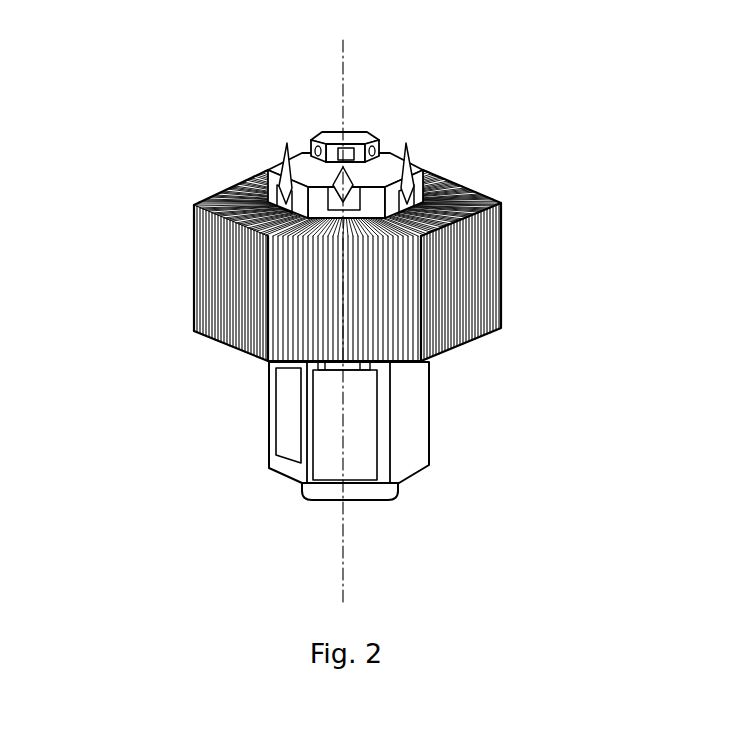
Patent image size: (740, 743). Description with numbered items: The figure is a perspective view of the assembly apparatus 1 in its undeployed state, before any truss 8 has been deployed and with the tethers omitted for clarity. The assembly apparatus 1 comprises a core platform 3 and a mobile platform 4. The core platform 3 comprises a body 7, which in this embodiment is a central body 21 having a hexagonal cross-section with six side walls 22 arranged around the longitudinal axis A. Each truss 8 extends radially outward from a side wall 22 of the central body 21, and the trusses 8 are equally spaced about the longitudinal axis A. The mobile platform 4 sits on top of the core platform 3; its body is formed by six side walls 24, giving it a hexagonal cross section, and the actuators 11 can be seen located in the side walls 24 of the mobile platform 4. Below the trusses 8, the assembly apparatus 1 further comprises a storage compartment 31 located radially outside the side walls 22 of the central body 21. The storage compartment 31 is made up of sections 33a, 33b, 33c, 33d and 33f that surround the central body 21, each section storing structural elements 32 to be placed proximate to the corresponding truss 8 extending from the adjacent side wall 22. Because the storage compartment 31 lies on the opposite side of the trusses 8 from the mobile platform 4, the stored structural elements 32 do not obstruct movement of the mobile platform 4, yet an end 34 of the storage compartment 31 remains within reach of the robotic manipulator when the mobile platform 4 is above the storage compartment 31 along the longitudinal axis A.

The assembly apparatus 1 is at (229, 90).
The core platform 3 is at (423, 453).
The mobile platform 4 is at (357, 137).
The body 7 is at (415, 393).
The truss 8 is at (431, 148).
The actuator 11 is at (313, 147).
The central body 21 is at (420, 370).
The side wall 22 is at (420, 427).
The side wall 24 is at (378, 143).
The storage compartment 31 is at (526, 197).
The structural element 32 is at (202, 275).
The section 33a is at (502, 320).
The section 33b is at (293, 363).
The section 33c is at (210, 340).
The section 33d is at (218, 192).
The section 33f is at (467, 190).
The end 34 is at (184, 208).